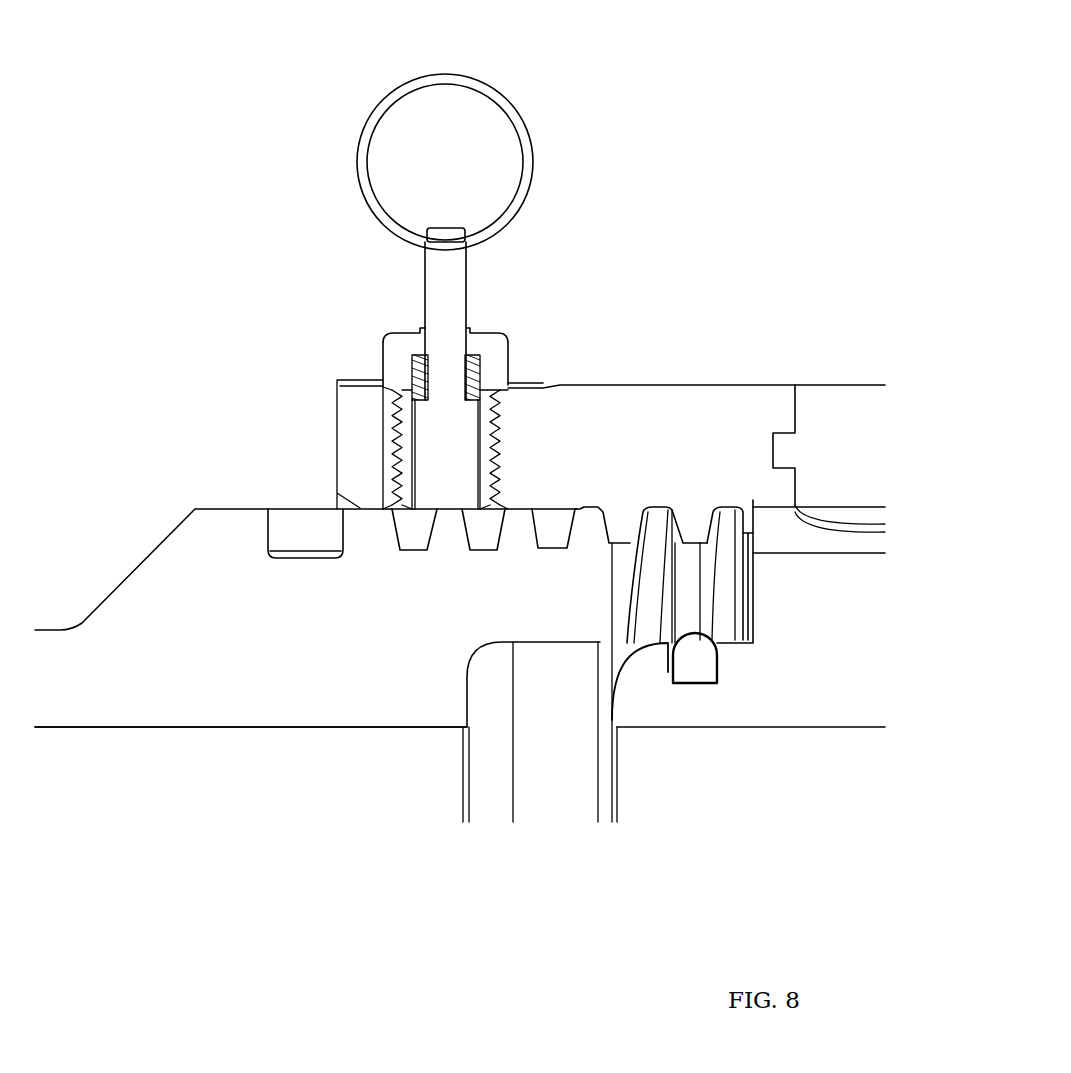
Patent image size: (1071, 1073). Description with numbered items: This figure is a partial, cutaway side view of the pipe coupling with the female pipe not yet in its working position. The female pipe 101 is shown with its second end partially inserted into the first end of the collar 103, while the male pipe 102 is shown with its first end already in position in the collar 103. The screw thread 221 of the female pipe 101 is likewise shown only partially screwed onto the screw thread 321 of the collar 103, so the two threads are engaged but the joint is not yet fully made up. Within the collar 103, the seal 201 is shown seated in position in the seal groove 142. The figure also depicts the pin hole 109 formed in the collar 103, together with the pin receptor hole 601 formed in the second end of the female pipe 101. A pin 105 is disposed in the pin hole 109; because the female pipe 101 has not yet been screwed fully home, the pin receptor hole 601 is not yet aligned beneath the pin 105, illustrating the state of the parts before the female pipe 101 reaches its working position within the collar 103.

The pin 105 is at (524, 98).
The pin hole 109 is at (391, 384).
The collar 103 is at (631, 368).
The screw thread of the collar 321 is at (702, 504).
The pin receptor hole 601 is at (290, 494).
The screw thread of the female pipe 221 is at (442, 533).
The female pipe 101 is at (233, 742).
The seal groove 142 is at (662, 681).
The seal 201 is at (696, 673).
The male pipe 102 is at (818, 742).